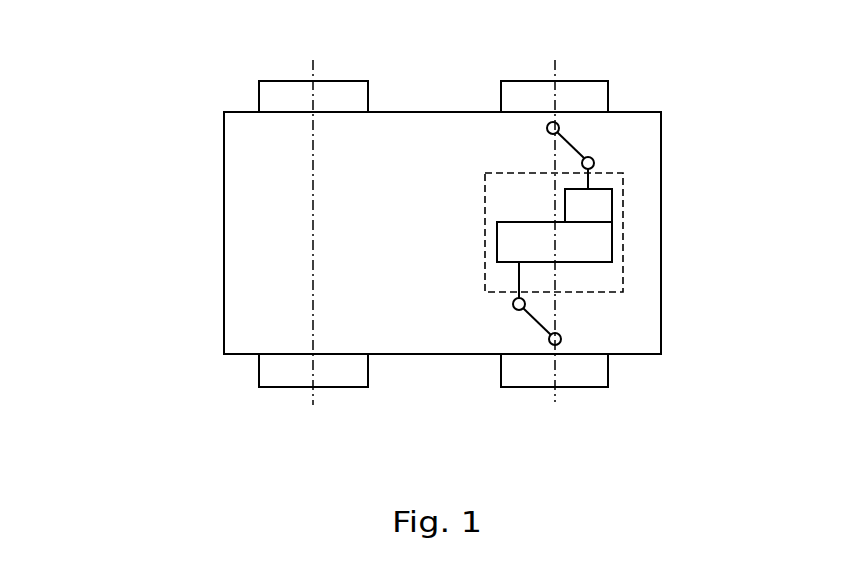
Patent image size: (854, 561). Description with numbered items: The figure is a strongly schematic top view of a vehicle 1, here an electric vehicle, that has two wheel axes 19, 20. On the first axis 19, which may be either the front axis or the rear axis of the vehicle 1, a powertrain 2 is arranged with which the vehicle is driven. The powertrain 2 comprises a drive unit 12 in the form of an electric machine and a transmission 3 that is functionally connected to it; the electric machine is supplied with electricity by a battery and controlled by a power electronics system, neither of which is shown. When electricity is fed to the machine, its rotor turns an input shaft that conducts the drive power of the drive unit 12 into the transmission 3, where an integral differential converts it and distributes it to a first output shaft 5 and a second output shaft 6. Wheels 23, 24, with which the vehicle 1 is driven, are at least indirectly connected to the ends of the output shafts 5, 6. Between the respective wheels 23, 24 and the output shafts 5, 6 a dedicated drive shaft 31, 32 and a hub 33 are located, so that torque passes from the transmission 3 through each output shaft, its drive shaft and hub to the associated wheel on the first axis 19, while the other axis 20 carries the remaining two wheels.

The vehicle 1 is at (173, 97).
The powertrain 2 is at (622, 280).
The transmission 3 is at (600, 242).
The first output shaft 5 is at (594, 178).
The second output shaft 6 is at (520, 279).
The drive unit 12 is at (600, 213).
The first axis 19 is at (555, 402).
The wheel axis 20 is at (313, 405).
The wheel 23 is at (583, 95).
The wheel 24 is at (527, 367).
The drive shaft 31 is at (594, 160).
The drive shaft 32 is at (561, 337).
The hub 33 is at (558, 125).